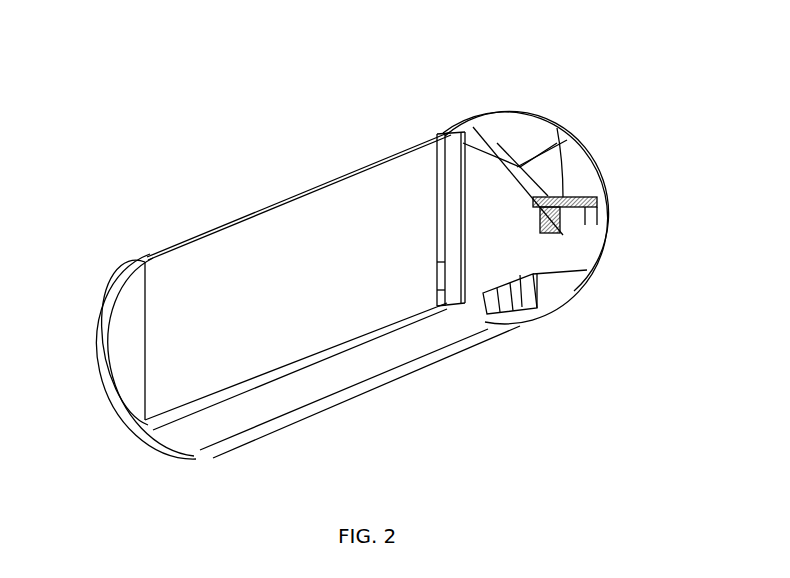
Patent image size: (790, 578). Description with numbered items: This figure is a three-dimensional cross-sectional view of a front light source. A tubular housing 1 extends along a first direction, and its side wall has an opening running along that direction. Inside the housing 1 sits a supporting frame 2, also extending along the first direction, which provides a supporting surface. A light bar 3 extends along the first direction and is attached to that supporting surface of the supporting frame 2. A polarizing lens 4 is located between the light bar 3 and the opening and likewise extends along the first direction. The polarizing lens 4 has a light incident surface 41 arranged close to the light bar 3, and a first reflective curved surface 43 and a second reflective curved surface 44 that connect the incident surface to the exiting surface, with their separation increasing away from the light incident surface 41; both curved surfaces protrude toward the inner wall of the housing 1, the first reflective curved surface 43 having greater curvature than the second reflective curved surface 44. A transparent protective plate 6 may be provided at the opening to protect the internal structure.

The housing 1 is at (487, 307).
The supporting frame 2 is at (588, 222).
The light bar 3 is at (552, 197).
The polarizing lens 4 is at (475, 197).
The light incident surface 41 is at (457, 243).
The first reflective curved surface 43 is at (517, 290).
The second reflective curved surface 44 is at (520, 170).
The transparent protective plate 6 is at (437, 272).